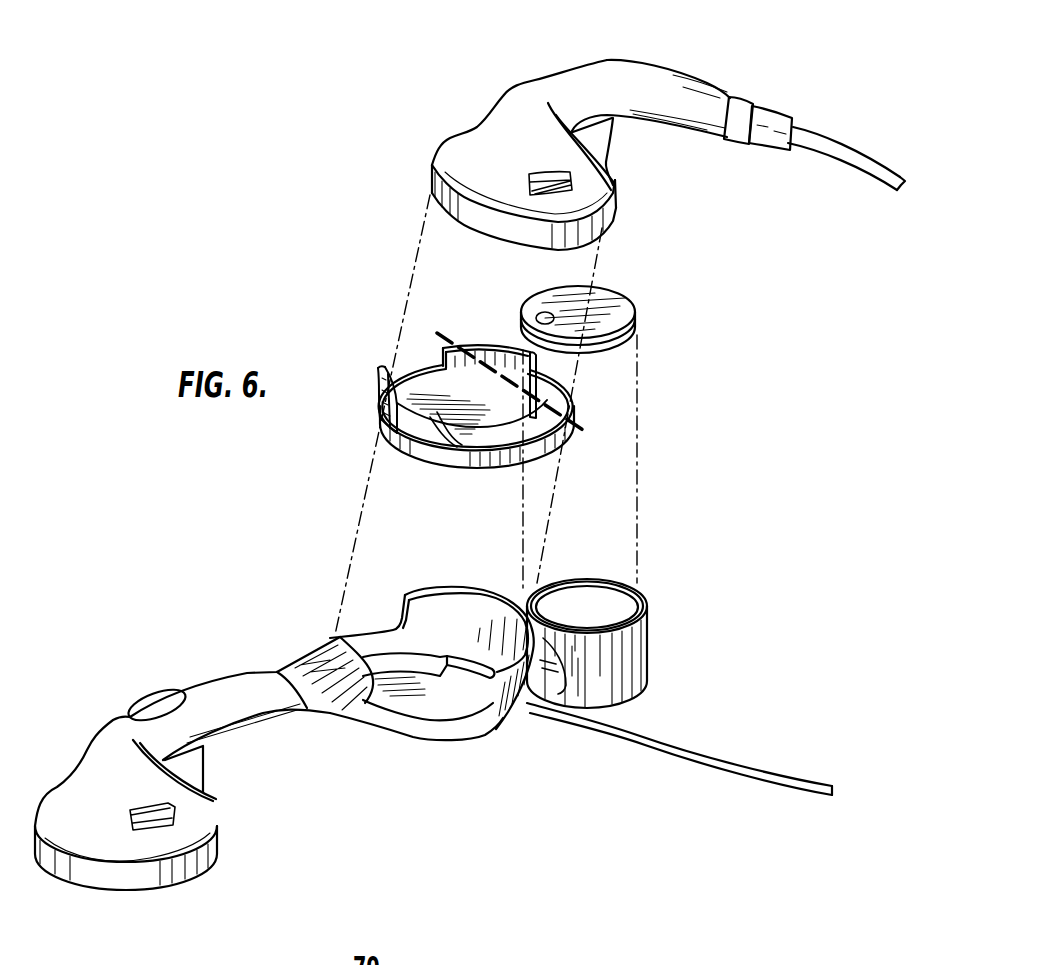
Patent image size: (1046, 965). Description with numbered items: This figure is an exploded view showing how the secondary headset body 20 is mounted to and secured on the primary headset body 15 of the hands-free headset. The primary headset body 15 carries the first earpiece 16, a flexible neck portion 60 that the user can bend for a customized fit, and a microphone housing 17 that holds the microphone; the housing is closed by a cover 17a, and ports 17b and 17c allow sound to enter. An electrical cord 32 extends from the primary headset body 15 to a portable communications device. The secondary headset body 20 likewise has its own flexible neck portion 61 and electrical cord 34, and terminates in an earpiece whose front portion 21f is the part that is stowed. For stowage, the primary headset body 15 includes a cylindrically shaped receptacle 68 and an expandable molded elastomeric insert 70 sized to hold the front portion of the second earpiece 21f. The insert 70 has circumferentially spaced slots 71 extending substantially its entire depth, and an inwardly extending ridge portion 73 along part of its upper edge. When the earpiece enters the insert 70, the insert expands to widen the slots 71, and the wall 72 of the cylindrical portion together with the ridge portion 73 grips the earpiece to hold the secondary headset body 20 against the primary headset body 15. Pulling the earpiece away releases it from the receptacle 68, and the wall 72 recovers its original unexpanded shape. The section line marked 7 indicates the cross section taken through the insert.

The flexible neck portion 61 is at (561, 50).
The secondary headset body 20 is at (690, 93).
The front portion of the second earpiece 21f is at (463, 222).
The electrical cord 34 is at (817, 140).
The cover 17a is at (597, 307).
The port 17b is at (527, 292).
The insert 70 is at (482, 407).
The slots 71 is at (543, 380).
The wall 72 is at (472, 415).
The ridge portion 73 is at (502, 360).
The section line 7- 7 is at (610, 417).
The flexible neck portion 60 is at (234, 768).
The primary headset body 15 is at (227, 697).
The first earpiece 16 is at (158, 872).
The receptacle 68 is at (411, 740).
The microphone housing 17 is at (621, 643).
The port 17c is at (696, 663).
The electrical cord 32 is at (635, 742).